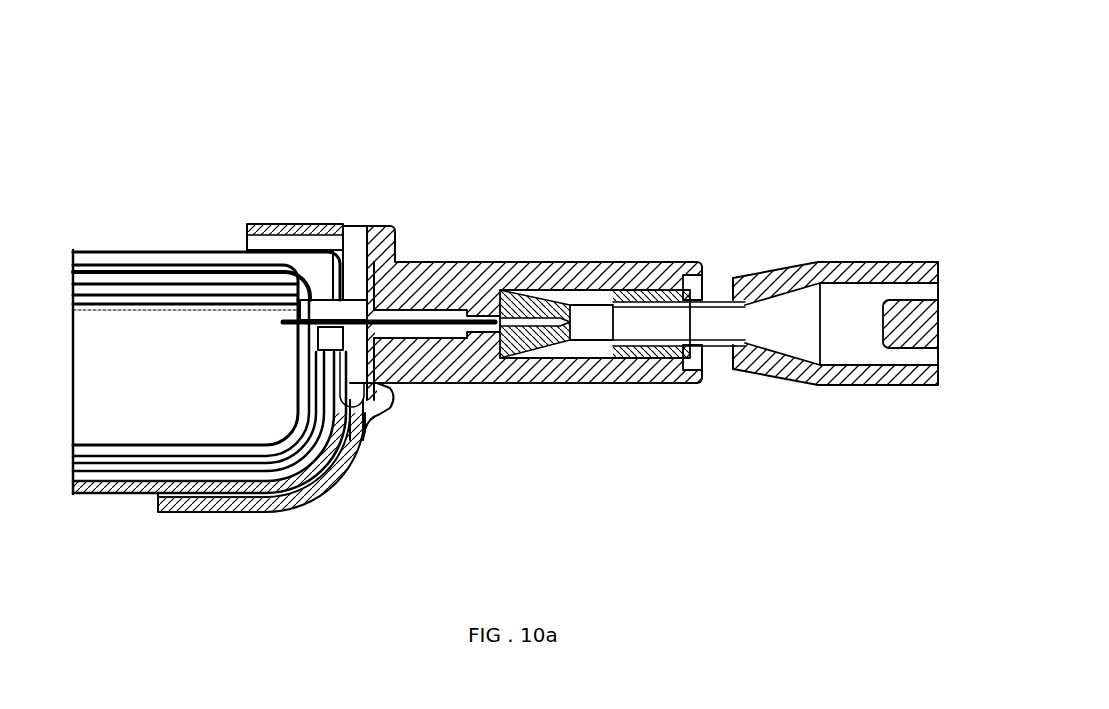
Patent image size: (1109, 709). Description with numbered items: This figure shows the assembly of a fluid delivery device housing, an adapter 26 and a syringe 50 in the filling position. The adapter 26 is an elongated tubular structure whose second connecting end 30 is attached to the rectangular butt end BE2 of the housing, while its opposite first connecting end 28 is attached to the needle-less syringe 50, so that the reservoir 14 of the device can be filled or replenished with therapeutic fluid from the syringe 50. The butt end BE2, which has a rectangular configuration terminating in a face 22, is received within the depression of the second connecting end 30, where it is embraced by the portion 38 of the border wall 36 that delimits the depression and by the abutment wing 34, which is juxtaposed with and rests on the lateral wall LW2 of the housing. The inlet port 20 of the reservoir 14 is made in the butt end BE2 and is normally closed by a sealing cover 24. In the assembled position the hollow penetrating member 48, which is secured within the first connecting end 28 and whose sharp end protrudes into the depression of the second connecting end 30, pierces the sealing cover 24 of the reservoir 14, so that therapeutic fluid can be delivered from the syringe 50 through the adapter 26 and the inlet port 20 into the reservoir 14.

The lateral wall LW2 is at (102, 495).
The reservoir 14 is at (233, 397).
The circular portion 38 is at (275, 226).
The inlet port 20 is at (337, 280).
The second connecting end 30 is at (403, 155).
The butt end BE2 is at (358, 265).
The sealing cover 24 is at (335, 340).
The adapter 26 is at (572, 257).
The hollow penetrating member 48 is at (480, 310).
The first connecting end 28 is at (683, 253).
The syringe 50 is at (828, 252).
The border wall 36 is at (385, 420).
The face 22 is at (363, 455).
The abutment wing 34 is at (222, 513).